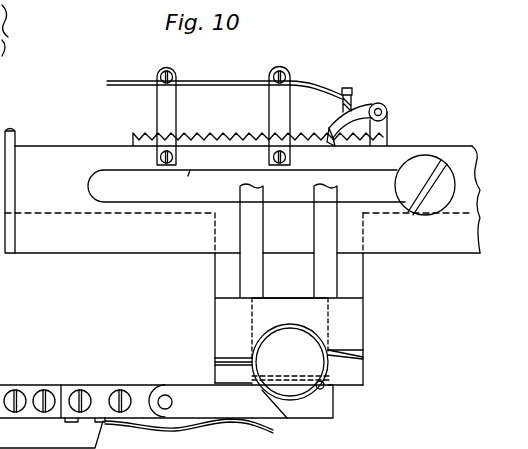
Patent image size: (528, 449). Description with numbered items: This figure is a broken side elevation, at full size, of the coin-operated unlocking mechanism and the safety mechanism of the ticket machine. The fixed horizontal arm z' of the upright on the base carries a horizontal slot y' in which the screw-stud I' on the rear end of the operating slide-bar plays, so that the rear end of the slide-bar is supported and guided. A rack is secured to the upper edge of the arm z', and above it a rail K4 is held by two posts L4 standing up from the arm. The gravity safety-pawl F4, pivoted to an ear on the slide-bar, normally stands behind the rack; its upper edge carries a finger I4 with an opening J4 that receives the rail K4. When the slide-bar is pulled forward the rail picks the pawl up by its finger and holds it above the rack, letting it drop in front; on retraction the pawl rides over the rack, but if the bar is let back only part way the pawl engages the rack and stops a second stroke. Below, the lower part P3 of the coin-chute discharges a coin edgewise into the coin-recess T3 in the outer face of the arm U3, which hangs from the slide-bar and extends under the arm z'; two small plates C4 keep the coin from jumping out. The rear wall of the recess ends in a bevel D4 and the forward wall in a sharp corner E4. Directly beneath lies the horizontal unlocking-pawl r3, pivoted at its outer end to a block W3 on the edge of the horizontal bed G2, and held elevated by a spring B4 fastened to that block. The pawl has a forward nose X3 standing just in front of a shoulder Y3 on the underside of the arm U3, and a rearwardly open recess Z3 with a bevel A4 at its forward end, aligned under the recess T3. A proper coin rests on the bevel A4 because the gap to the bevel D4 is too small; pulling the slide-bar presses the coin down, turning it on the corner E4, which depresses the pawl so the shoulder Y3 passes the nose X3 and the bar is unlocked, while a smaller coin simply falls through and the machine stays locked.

The rail K4 is at (228, 79).
The posts L4 is at (223, 116).
The horizontal arm z' is at (242, 191).
The horizontal slot y' is at (189, 181).
The screw-stud I' is at (425, 185).
The finger I4 is at (344, 88).
The opening J4 is at (352, 100).
The gravity safety-pawl F4 is at (374, 106).
The small plates C4 is at (380, 132).
The part of coin-chute P3 is at (262, 254).
The arm U3 is at (358, 272).
The coin-recess T3 is at (290, 305).
The bevel D4 is at (336, 356).
The sharp corner E4 is at (244, 370).
The shoulder Y3 is at (330, 383).
The nose X3 is at (324, 389).
The bevel A4 is at (289, 371).
The recess Z3 is at (304, 416).
The unlocking-pawl r3 is at (126, 401).
The spring B4 is at (203, 424).
The block W3 is at (33, 380).
The horizontal bed G2 is at (52, 433).